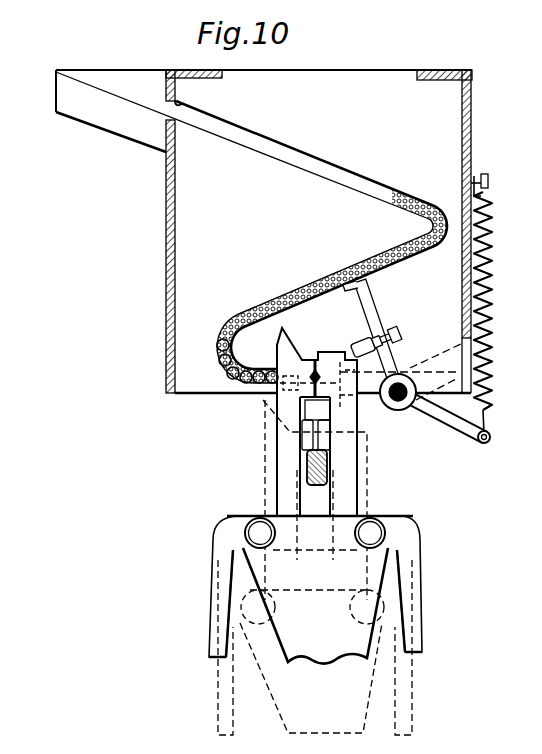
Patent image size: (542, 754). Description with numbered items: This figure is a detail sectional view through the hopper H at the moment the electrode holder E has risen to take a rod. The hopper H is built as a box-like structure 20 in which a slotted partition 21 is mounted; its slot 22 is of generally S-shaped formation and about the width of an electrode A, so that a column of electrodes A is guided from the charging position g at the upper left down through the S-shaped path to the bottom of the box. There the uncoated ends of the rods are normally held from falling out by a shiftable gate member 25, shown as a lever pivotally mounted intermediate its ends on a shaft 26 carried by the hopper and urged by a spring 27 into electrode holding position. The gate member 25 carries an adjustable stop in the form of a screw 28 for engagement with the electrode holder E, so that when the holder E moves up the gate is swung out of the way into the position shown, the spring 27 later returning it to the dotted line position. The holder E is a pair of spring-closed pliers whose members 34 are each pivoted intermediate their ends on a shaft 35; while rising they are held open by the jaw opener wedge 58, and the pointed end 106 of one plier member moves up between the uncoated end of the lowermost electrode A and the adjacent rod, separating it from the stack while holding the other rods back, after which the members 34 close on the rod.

The hopper H is at (388, 68).
The charging position g is at (140, 90).
The box-like structure 20 is at (167, 199).
The slotted partition 21 is at (193, 226).
The slot 22 is at (311, 241).
The electrode A is at (228, 322).
The spring 27 is at (488, 283).
The gate member 25 is at (373, 301).
The screw 28 is at (356, 346).
The shaft 26 is at (396, 410).
The pointed end 106 is at (281, 345).
The jaw opener cam 58 is at (328, 472).
The electrode holder E is at (270, 453).
The plier member 34 is at (280, 475).
The shaft 35 is at (254, 531).